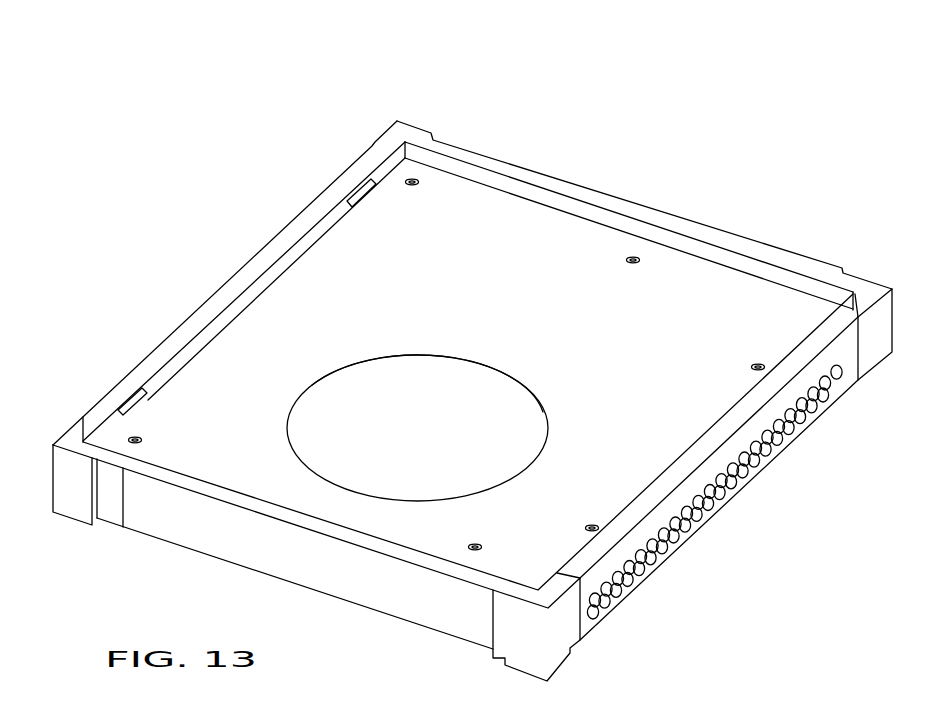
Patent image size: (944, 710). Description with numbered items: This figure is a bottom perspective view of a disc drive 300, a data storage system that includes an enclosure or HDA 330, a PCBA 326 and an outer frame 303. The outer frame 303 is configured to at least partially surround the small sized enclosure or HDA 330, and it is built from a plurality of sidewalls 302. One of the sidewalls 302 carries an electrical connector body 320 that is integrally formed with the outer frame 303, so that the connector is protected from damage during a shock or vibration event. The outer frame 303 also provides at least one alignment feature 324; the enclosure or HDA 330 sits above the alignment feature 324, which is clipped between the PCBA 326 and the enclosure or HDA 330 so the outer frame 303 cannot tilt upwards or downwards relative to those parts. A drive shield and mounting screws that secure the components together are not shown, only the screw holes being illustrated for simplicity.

The disc drive 300 is at (715, 145).
The sidewalls 302 is at (472, 401).
The outer frame 303 is at (733, 230).
The electrical connector body 320 is at (742, 489).
The alignment feature 324 is at (363, 183).
The PCBA 326 is at (475, 223).
The enclosure or HDA 330 is at (385, 402).